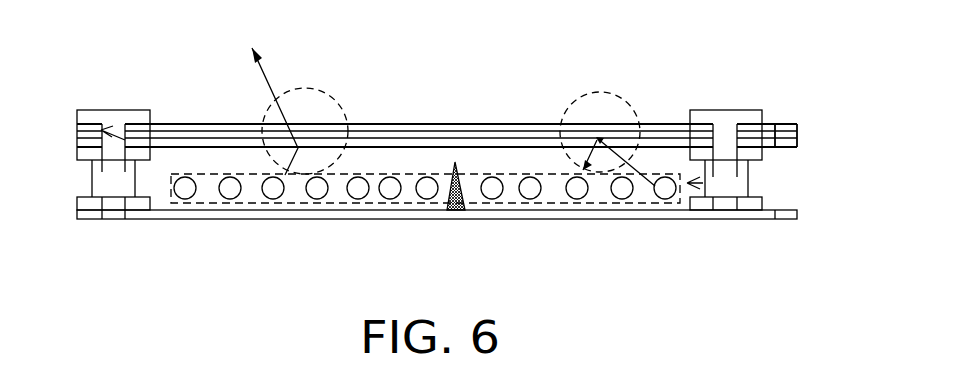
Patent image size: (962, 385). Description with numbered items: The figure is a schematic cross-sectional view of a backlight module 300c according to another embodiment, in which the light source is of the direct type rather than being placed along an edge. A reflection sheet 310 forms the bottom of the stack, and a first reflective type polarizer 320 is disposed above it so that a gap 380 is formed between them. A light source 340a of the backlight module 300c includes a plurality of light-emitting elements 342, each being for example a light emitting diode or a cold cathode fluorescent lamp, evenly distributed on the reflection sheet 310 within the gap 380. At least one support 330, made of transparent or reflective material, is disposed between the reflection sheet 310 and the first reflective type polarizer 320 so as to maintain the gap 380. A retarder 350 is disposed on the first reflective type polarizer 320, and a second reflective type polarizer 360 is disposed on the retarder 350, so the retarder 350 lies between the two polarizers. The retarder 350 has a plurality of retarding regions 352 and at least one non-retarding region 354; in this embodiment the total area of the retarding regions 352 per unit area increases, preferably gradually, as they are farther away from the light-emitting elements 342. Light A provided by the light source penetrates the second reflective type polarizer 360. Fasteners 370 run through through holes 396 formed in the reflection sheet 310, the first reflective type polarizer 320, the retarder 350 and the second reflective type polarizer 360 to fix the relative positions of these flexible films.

The backlight module 300c is at (722, 352).
The reflection sheet 310 is at (797, 214).
The first reflective type polarizer 320 is at (797, 147).
The support 330 is at (465, 198).
The light source 340a is at (197, 205).
The light-emitting element 342 is at (230, 192).
The retarder 350 is at (797, 138).
The retarding region 352 is at (346, 108).
The non-retarding region 354 is at (638, 113).
The second reflective type polarizer 360 is at (797, 126).
The fastener 370 is at (112, 185).
The gap 380 is at (703, 183).
The through hole 396 is at (125, 128).
The light A is at (600, 137).